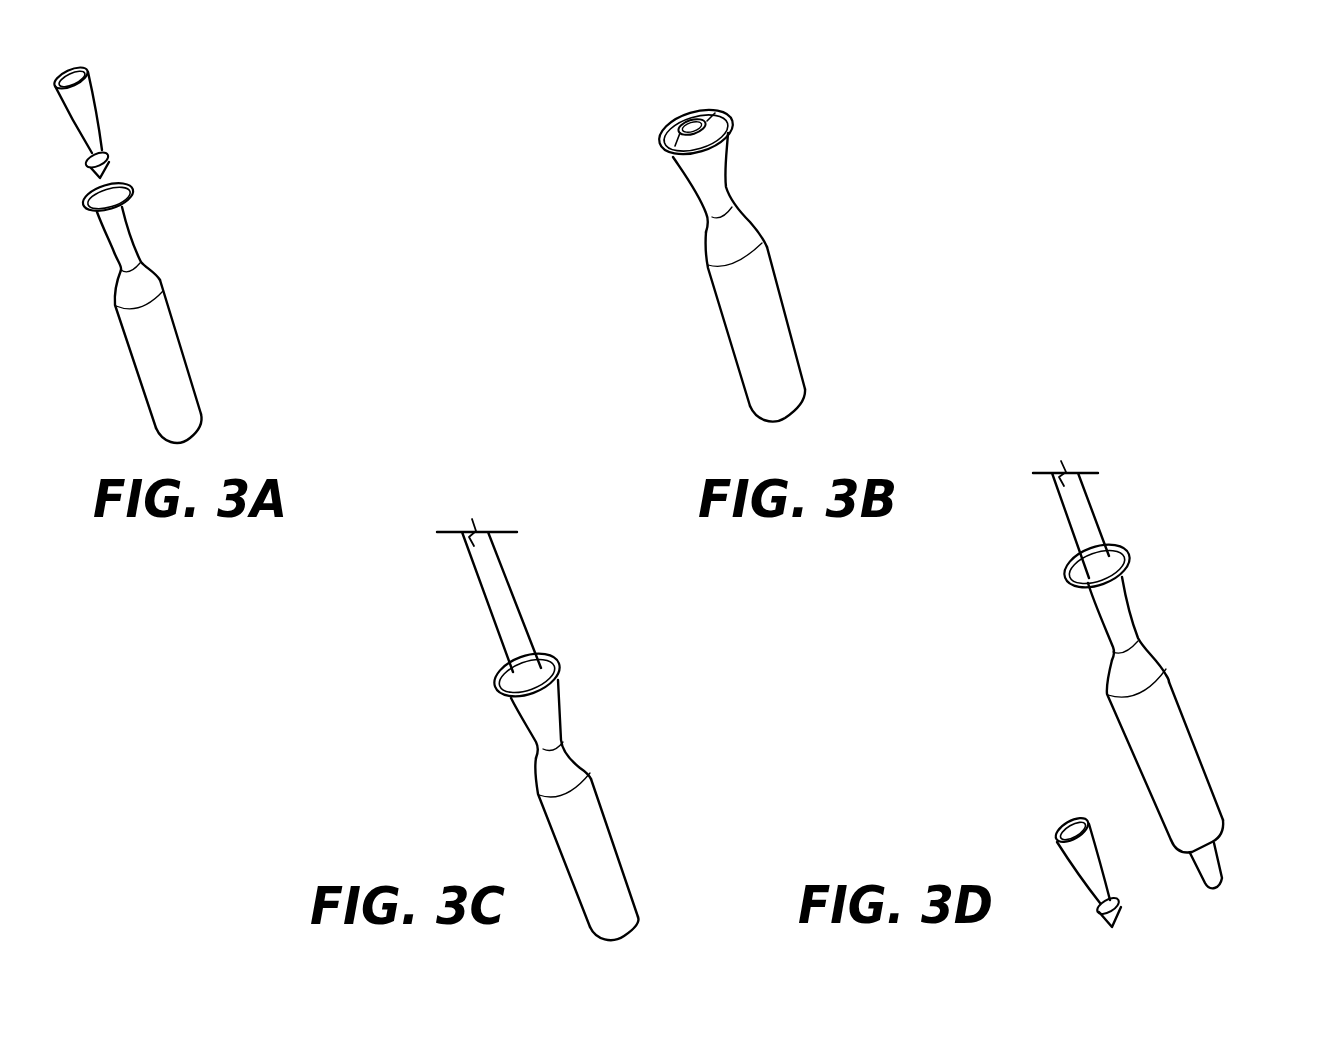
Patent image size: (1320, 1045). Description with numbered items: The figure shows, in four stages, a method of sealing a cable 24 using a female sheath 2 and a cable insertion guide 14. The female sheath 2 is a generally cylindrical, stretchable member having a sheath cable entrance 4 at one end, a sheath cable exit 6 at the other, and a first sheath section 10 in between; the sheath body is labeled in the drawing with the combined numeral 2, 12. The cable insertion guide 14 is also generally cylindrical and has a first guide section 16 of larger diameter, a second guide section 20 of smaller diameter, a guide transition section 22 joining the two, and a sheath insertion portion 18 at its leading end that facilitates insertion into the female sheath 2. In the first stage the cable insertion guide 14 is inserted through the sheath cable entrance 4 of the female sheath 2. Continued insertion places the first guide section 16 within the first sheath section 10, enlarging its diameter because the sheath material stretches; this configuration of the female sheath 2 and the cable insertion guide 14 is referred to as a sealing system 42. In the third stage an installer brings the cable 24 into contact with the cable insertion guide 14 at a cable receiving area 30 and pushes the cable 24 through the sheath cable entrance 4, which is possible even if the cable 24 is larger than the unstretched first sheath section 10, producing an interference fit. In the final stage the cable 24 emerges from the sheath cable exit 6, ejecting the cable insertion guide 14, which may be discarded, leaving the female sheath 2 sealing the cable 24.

In FIG. 3A, the female sheath 2 is at (193, 349).
In FIG. 3B, the female sheath 2 is at (791, 319).
In FIG. 3C, the female sheath 2 is at (620, 842).
In FIG. 3D, the female sheath 2 is at (1179, 750).
In FIG. 3A, the sheath cable entrance 4 is at (124, 183).
In FIG. 3B, the sheath cable entrance 4 is at (735, 123).
In FIG. 3C, the sheath cable entrance 4 is at (562, 664).
In FIG. 3D, the sheath cable entrance 4 is at (1130, 556).
In FIG. 3A, the sheath cable exit 6 is at (198, 431).
In FIG. 3B, the sheath cable exit 6 is at (804, 408).
In FIG. 3C, the sheath cable exit 6 is at (644, 922).
In FIG. 3D, the sheath cable exit 6 is at (1217, 836).
In FIG. 3A, the first sheath section 10 is at (129, 229).
In FIG. 3B, the first sheath section 10 is at (729, 186).
In FIG. 3C, the first sheath section 10 is at (564, 708).
In FIG. 3D, the first sheath section 10 is at (1128, 613).
In FIG. 3A, the reservoir body 12 is at (178, 330).
In FIG. 3B, the reservoir body 12 is at (784, 297).
In FIG. 3C, the reservoir body 12 is at (618, 833).
In FIG. 3D, the reservoir body 12 is at (1197, 743).
In FIG. 3A, the cable insertion guide 14 is at (103, 116).
In FIG. 3B, the cable insertion guide 14 is at (720, 107).
In FIG. 3D, the cable insertion guide 14 is at (1074, 866).
In FIG. 3A, the first guide section 16 is at (103, 116).
In FIG. 3B, the first guide section 16 is at (720, 107).
In FIG. 3D, the first guide section 16 is at (1074, 866).
In FIG. 3A, the sheath insertion portion 18 is at (90, 176).
In FIG. 3D, the sheath insertion portion 18 is at (1098, 921).
In FIG. 3A, the second guide section 20 is at (85, 160).
In FIG. 3D, the second guide section 20 is at (1097, 907).
In FIG. 3A, the guide transition section 22 is at (101, 118).
In FIG. 3D, the guide transition section 22 is at (1104, 853).
In FIG. 3C, the cable 24 is at (515, 601).
In FIG. 3D, the cable 24 is at (1096, 519).
In FIG. 3A, the cable receiving area 30 is at (66, 71).
In FIG. 3B, the cable receiving area 30 is at (681, 118).
In FIG. 3D, the cable receiving area 30 is at (1055, 829).
In FIG. 3B, the sealing system 42 is at (742, 251).
In FIG. 3C, the sealing system 42 is at (571, 730).